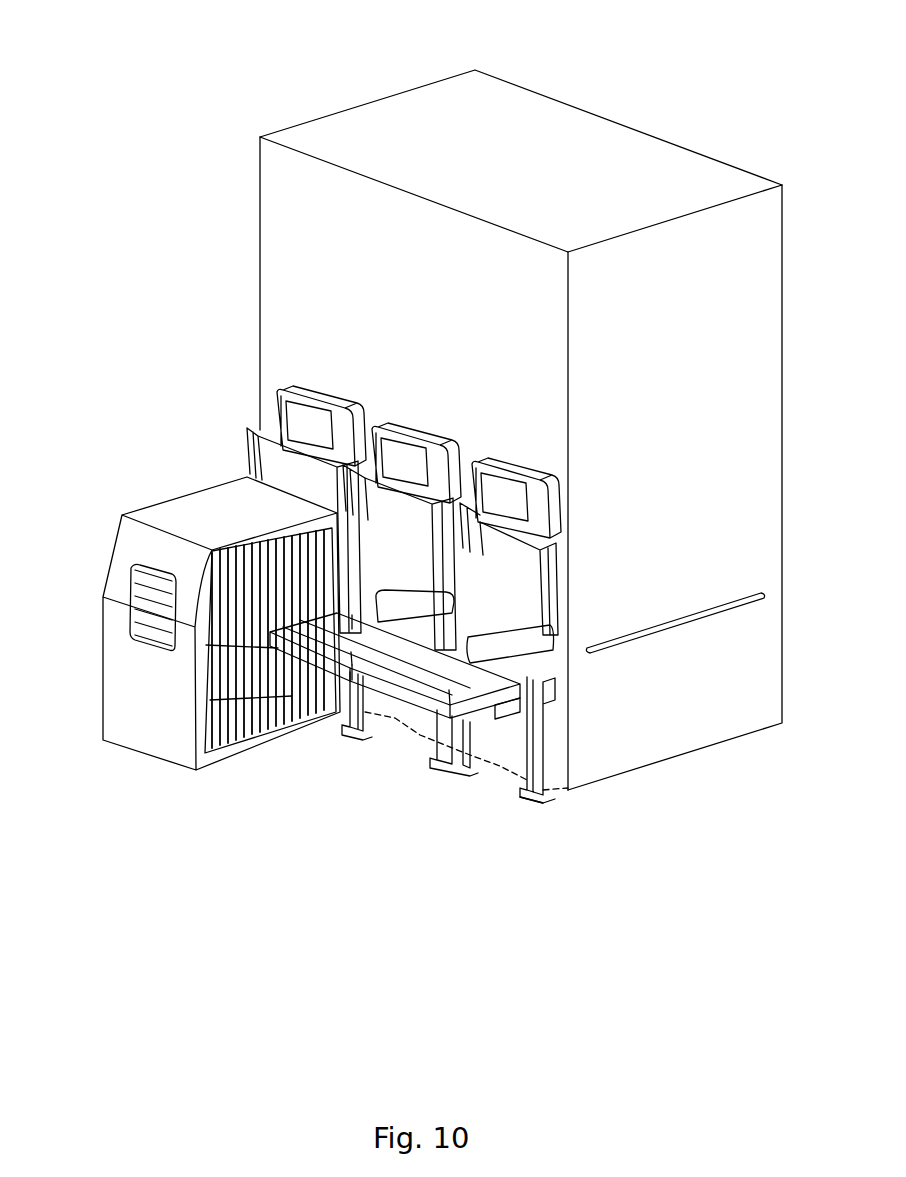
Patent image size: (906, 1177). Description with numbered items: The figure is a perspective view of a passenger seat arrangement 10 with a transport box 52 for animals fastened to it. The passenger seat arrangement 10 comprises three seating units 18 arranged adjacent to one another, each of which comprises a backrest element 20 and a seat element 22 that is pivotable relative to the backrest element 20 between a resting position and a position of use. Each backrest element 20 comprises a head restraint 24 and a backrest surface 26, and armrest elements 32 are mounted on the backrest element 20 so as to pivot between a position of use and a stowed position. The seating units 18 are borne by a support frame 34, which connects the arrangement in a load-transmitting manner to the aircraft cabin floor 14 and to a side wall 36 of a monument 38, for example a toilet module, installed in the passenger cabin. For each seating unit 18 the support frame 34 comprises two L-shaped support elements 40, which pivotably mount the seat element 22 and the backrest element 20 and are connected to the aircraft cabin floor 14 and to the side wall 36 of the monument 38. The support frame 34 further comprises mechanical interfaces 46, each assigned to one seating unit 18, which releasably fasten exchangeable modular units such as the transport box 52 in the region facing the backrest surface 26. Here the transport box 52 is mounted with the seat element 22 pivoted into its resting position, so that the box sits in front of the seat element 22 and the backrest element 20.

The passenger seat arrangement 10 is at (201, 370).
The aircraft cabin floor 14 is at (160, 836).
The seating unit 18 is at (453, 454).
The backrest element 20 is at (554, 503).
The seat element 22 is at (497, 712).
The head restraint 24 is at (510, 488).
The backrest surface 26 is at (520, 593).
The armrest element 32 is at (530, 634).
The support frame 34 is at (572, 740).
The side wall 36 is at (280, 193).
The monument 38 is at (266, 63).
The support element 40 is at (533, 803).
The mechanical interface 46 is at (343, 605).
The transport box 52 is at (152, 682).